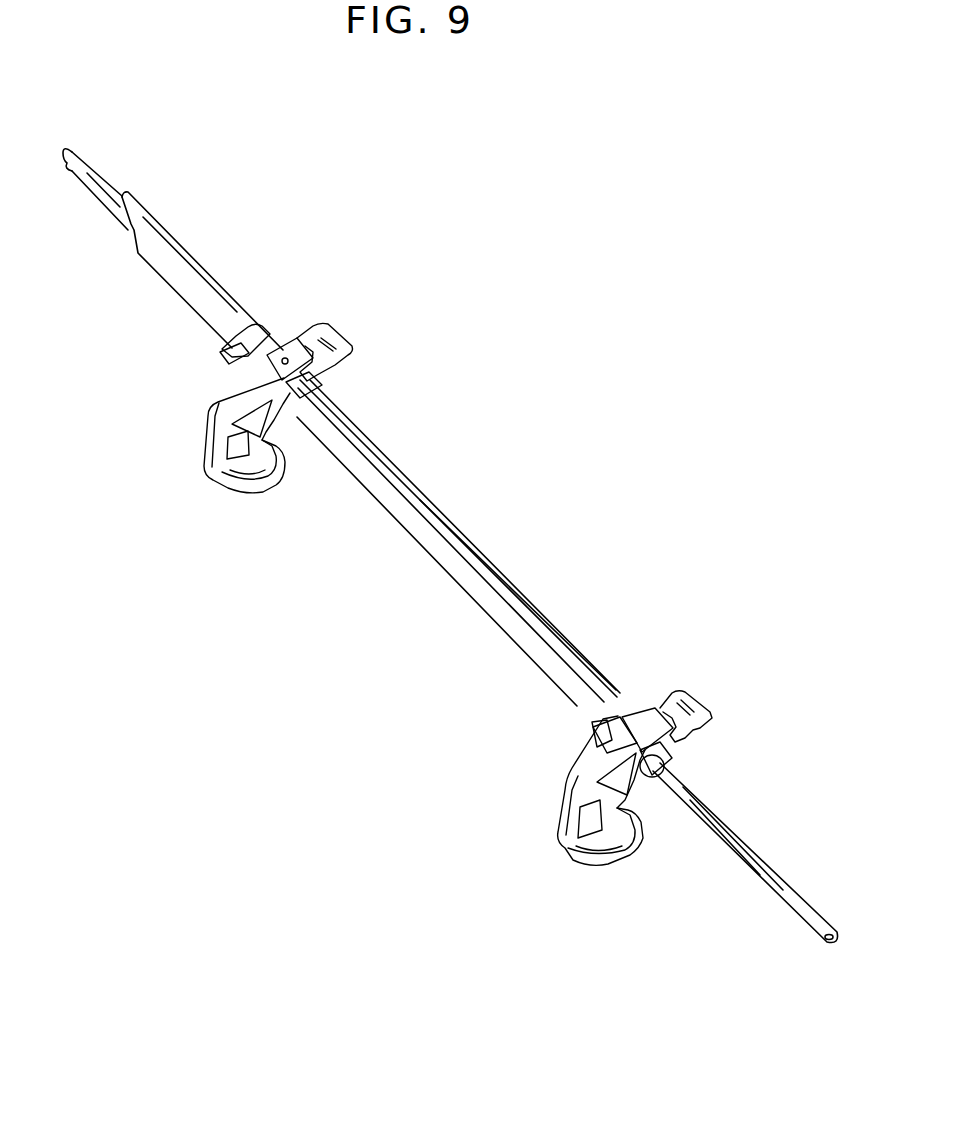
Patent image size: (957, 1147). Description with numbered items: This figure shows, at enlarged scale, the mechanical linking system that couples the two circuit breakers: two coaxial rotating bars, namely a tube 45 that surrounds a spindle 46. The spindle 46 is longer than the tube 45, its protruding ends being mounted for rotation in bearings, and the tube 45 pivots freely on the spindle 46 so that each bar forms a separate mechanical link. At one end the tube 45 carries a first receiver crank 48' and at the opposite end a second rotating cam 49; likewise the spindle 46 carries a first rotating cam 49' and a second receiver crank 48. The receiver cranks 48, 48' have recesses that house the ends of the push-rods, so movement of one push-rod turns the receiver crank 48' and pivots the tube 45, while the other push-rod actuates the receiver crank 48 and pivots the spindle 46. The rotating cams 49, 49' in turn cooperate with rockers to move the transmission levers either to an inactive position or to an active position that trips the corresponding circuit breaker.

The tube 45 is at (495, 577).
The spindle 46 is at (740, 840).
The second receiver crank 48 is at (361, 328).
The first receiver crank 48' is at (694, 693).
The second rotating cam 49 is at (212, 470).
The first rotating cam 49' is at (549, 828).